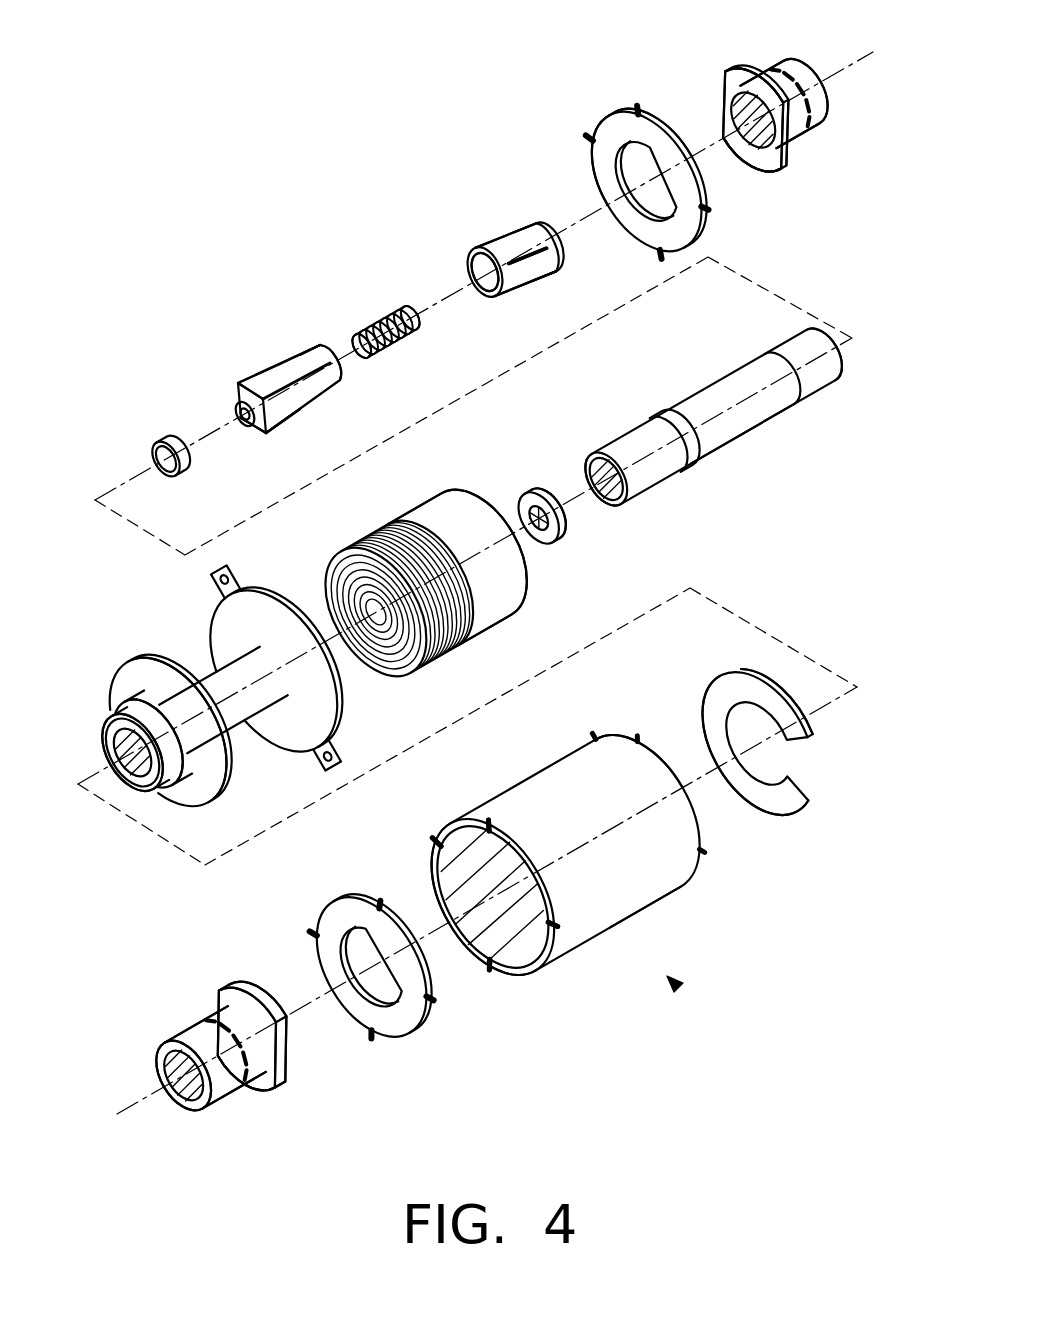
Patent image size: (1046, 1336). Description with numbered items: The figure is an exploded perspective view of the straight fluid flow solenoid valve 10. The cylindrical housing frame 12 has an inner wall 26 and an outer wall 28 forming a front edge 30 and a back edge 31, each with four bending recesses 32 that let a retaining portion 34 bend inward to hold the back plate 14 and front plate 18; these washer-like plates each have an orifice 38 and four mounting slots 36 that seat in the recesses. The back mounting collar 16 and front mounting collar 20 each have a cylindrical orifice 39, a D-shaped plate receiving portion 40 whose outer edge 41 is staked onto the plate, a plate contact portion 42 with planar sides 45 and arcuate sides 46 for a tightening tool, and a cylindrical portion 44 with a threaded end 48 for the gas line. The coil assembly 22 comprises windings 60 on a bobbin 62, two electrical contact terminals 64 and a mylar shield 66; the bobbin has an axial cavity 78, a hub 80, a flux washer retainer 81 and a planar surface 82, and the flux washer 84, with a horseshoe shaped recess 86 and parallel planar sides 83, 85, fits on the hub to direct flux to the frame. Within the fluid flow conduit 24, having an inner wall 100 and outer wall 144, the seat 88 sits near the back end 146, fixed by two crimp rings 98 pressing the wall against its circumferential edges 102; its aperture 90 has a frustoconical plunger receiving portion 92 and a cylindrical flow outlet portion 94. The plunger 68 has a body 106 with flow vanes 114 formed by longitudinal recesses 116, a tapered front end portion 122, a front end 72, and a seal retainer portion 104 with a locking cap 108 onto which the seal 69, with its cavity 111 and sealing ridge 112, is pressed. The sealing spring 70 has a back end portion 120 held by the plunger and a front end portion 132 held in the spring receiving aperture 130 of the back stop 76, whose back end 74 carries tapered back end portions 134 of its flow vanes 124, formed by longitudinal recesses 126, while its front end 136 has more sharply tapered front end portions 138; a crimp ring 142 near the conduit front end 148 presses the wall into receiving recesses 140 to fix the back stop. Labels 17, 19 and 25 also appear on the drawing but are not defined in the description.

The straight fluid flow solenoid valve 10 is at (672, 982).
The housing frame 12 is at (527, 777).
The back plate 14 is at (400, 1022).
The back mounting collar 16 is at (208, 993).
The plate edge 17 is at (588, 180).
The front plate 18 is at (597, 105).
The plate rim 19 is at (695, 178).
The front mounting collar 20 is at (715, 70).
The coil assembly 22 is at (392, 530).
The fluid flow conduit 24 is at (707, 383).
The tube end 25 is at (610, 507).
The inner wall 26 is at (513, 968).
The outer wall 28 is at (600, 907).
The front edge 30 is at (438, 833).
The back edge 31 is at (673, 768).
The bending recesses 32 is at (637, 742).
The retaining portion 34 is at (605, 738).
The mounting slots 36 is at (642, 108).
The orifice 38 is at (640, 183).
The cylindrical orifice 39 is at (757, 147).
The plate receiving portion 40 is at (723, 103).
The outer edge 41 is at (747, 87).
The plate contact portion 42 is at (263, 1080).
The cylindrical portion 44 is at (800, 65).
The parallel planar sides 45 is at (798, 147).
The arcuate shaped sides 46 is at (762, 70).
The threaded end 48 is at (820, 130).
The windings 60 is at (443, 627).
The bobbin 62 is at (133, 655).
The electrical contact terminals 64 is at (235, 573).
The mylar shield 66 is at (463, 530).
The plunger 68 is at (232, 388).
The seal 69 is at (148, 447).
The sealing spring 70 is at (375, 322).
The front end 72 is at (340, 347).
The back end 74 is at (473, 300).
The back stop 76 is at (472, 207).
The axial cavity 78 is at (137, 765).
The hub 80 is at (187, 763).
The flux washer retainer 81 is at (108, 717).
The planar surface 82 is at (162, 703).
The planar side 83 is at (737, 675).
The flux washer 84 is at (712, 690).
The planar side 85 is at (795, 695).
The horseshoe shaped recess 86 is at (772, 767).
The seat 88 is at (535, 487).
The aperture 90 is at (533, 517).
The plunger receiving portion 92 is at (547, 535).
The flow outlet portion 94 is at (537, 532).
The circumferential crimp rings 98 is at (647, 420).
The inner wall 100 is at (633, 477).
The circumferential edges 102 is at (575, 520).
The seal retainer portion 104 is at (235, 405).
The body 106 is at (252, 378).
The locking cap 108 is at (240, 425).
The cavity 111 is at (200, 435).
The sealing ridge 112 is at (160, 470).
The flow vanes 114 is at (236, 384).
The longitudinal recesses 116 is at (285, 360).
The back end portion 120 is at (367, 358).
The front end portion 122 is at (342, 365).
The flow vanes 124 is at (510, 230).
The longitudinal recesses 126 is at (477, 247).
The spring receiving aperture 130 is at (470, 275).
The front end portion 132 is at (417, 325).
The back end portions 134 is at (478, 255).
The front end 136 is at (545, 230).
The front end portions 138 is at (563, 237).
The receiving recesses 140 is at (497, 227).
The crimp ring 142 is at (787, 403).
The outer wall 144 is at (737, 430).
The back end 146 is at (592, 455).
The front end 148 is at (825, 330).